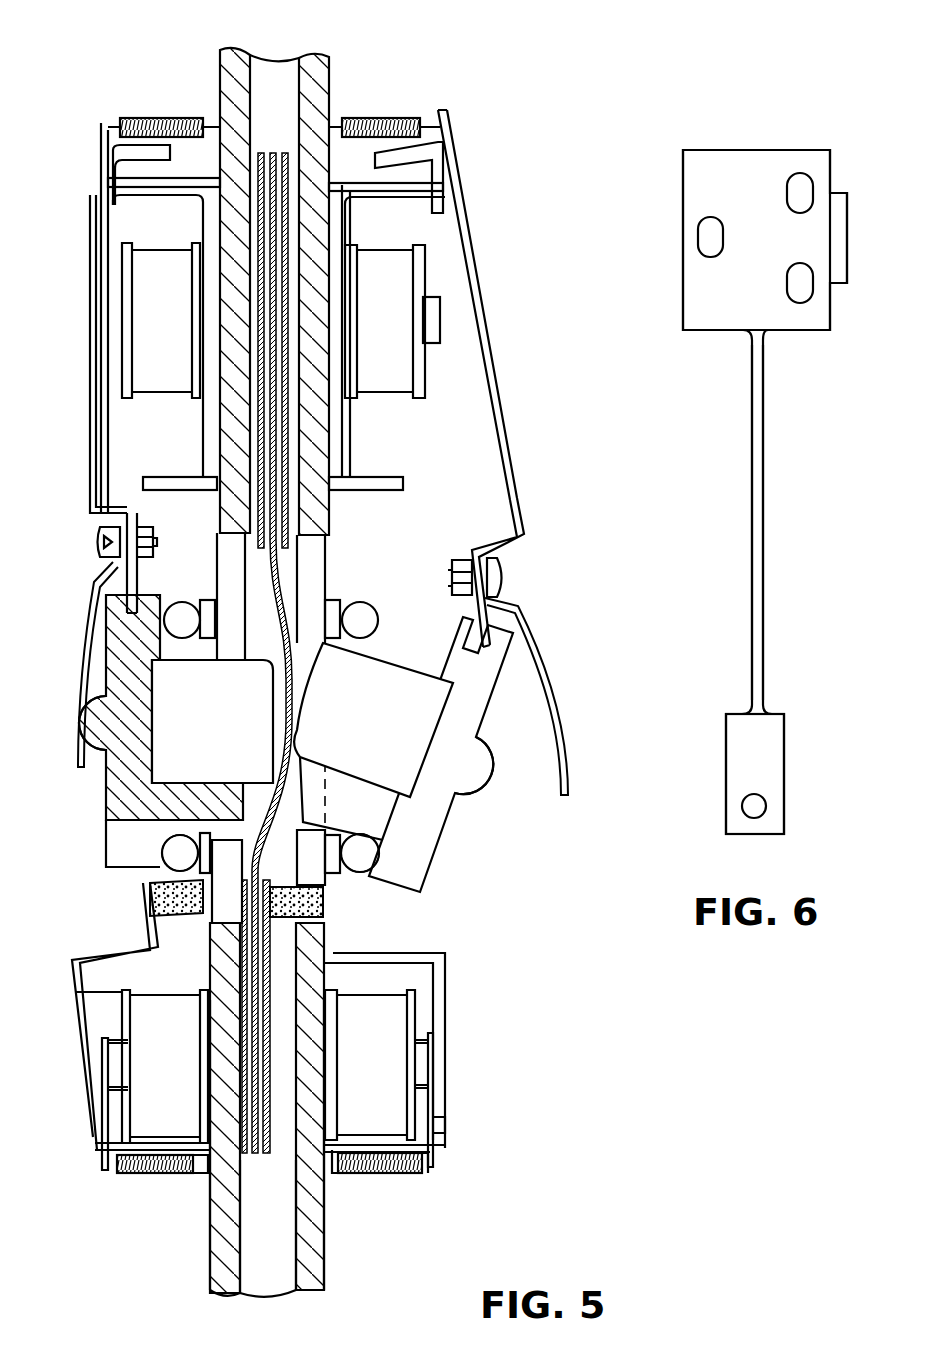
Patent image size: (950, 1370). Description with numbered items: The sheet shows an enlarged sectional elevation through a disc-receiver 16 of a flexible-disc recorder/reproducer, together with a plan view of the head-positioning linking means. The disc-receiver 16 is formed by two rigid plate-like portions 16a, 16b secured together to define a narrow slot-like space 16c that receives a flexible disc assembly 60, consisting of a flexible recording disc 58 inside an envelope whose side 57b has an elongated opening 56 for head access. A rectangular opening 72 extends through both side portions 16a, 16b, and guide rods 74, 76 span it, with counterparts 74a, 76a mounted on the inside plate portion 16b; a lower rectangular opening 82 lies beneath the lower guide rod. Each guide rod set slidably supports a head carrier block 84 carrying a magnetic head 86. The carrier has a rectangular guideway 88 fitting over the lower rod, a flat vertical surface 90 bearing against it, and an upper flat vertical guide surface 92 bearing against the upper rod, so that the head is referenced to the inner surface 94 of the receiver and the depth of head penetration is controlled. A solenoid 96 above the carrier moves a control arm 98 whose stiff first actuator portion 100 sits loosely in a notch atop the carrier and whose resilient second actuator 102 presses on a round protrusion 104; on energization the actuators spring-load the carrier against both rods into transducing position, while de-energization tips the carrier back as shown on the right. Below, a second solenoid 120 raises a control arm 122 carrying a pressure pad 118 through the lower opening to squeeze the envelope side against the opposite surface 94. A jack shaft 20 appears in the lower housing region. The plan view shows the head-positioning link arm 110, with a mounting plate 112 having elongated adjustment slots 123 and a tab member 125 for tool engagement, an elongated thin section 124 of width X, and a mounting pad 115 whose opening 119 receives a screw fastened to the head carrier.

In FIG. 5, the disc-receiver 16 is at (332, 74).
In FIG. 5, the plate-like portion 16a is at (210, 1258).
In FIG. 5, the plate-like portion 16b is at (322, 1285).
In FIG. 5, the slot-like space 16c is at (264, 1280).
In FIG. 5, the jack shaft 20 is at (138, 1102).
In FIG. 5, the elongated opening 56 is at (253, 560).
In FIG. 5, the envelope side 57b is at (289, 154).
In FIG. 5, the flexible recording disc 58 is at (290, 566).
In FIG. 5, the flexible disc assembly 60 is at (277, 152).
In FIG. 5, the rectangular opening 72 is at (219, 567).
In FIG. 5, the upper guide rod 74 is at (185, 606).
In FIG. 5, the counterpart guide rod 74a is at (369, 611).
In FIG. 5, the lower guide rod 76 is at (171, 866).
In FIG. 5, the counterpart guide rod 76a is at (363, 869).
In FIG. 5, the lower rectangular opening 82 is at (218, 917).
In FIG. 5, the head carrier block 84 is at (102, 793).
In FIG. 5, the magnetic head 86 is at (194, 719).
In FIG. 5, the rectangular guideway 88 is at (203, 834).
In FIG. 5, the flat vertical surface 90 is at (166, 838).
In FIG. 5, the flat vertical guide surface 92 is at (162, 630).
In FIG. 5, the inner surface 94 is at (247, 633).
In FIG. 5, the solenoid 96 is at (86, 290).
In FIG. 5, the control arm 98 is at (90, 430).
In FIG. 5, the first actuator portion 100 is at (127, 580).
In FIG. 5, the resilient second actuator 102 is at (83, 640).
In FIG. 5, the round protrusion 104 is at (92, 702).
In FIG. 5, the pressure pad 118 is at (152, 908).
In FIG. 5, the second solenoid 120 is at (395, 1123).
In FIG. 5, the control arm 122 is at (76, 993).
In FIG. 6, the head-positioning link arm 110 is at (778, 492).
In FIG. 6, the mounting plate 112 is at (790, 163).
In FIG. 6, the mounting pad 115 is at (776, 766).
In FIG. 6, the opening 119 is at (762, 808).
In FIG. 6, the elongated adjustment slots 123 is at (705, 238).
In FIG. 6, the elongated thin section 124 is at (757, 592).
In FIG. 6, the tab member 125 is at (837, 236).